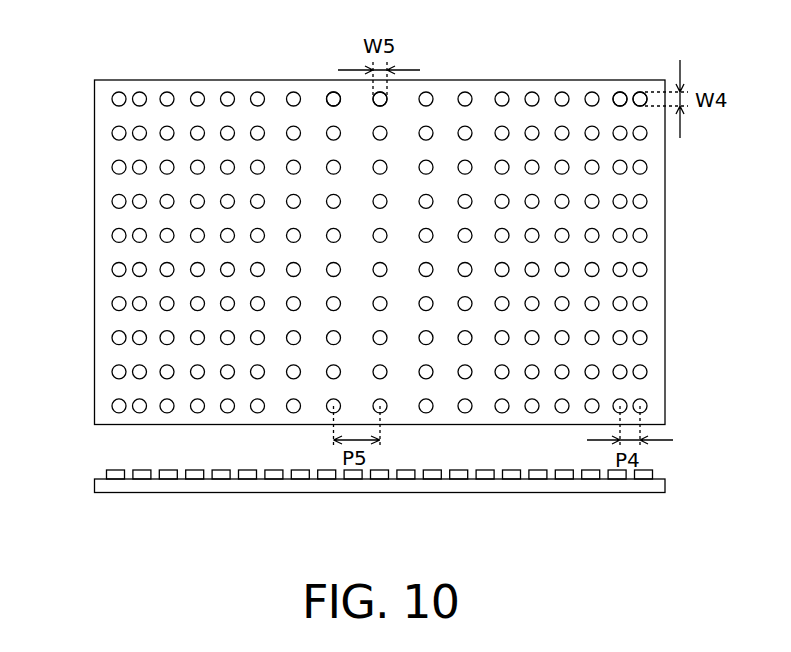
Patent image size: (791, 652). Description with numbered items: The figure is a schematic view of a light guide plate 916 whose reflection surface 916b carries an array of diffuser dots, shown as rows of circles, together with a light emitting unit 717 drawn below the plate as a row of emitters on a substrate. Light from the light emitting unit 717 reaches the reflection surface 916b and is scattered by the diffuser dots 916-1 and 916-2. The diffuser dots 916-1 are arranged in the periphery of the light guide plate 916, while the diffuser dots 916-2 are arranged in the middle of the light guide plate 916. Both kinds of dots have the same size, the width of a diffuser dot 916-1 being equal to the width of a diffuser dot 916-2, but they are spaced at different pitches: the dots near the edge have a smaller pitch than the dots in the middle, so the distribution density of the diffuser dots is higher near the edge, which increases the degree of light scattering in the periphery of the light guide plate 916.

The light guide plate 916 is at (107, 80).
The diffuser dots 916-1 is at (618, 92).
The diffuser dots 916-2 is at (333, 98).
The reflection surface 916b is at (657, 308).
The light emitting unit 717 is at (666, 485).